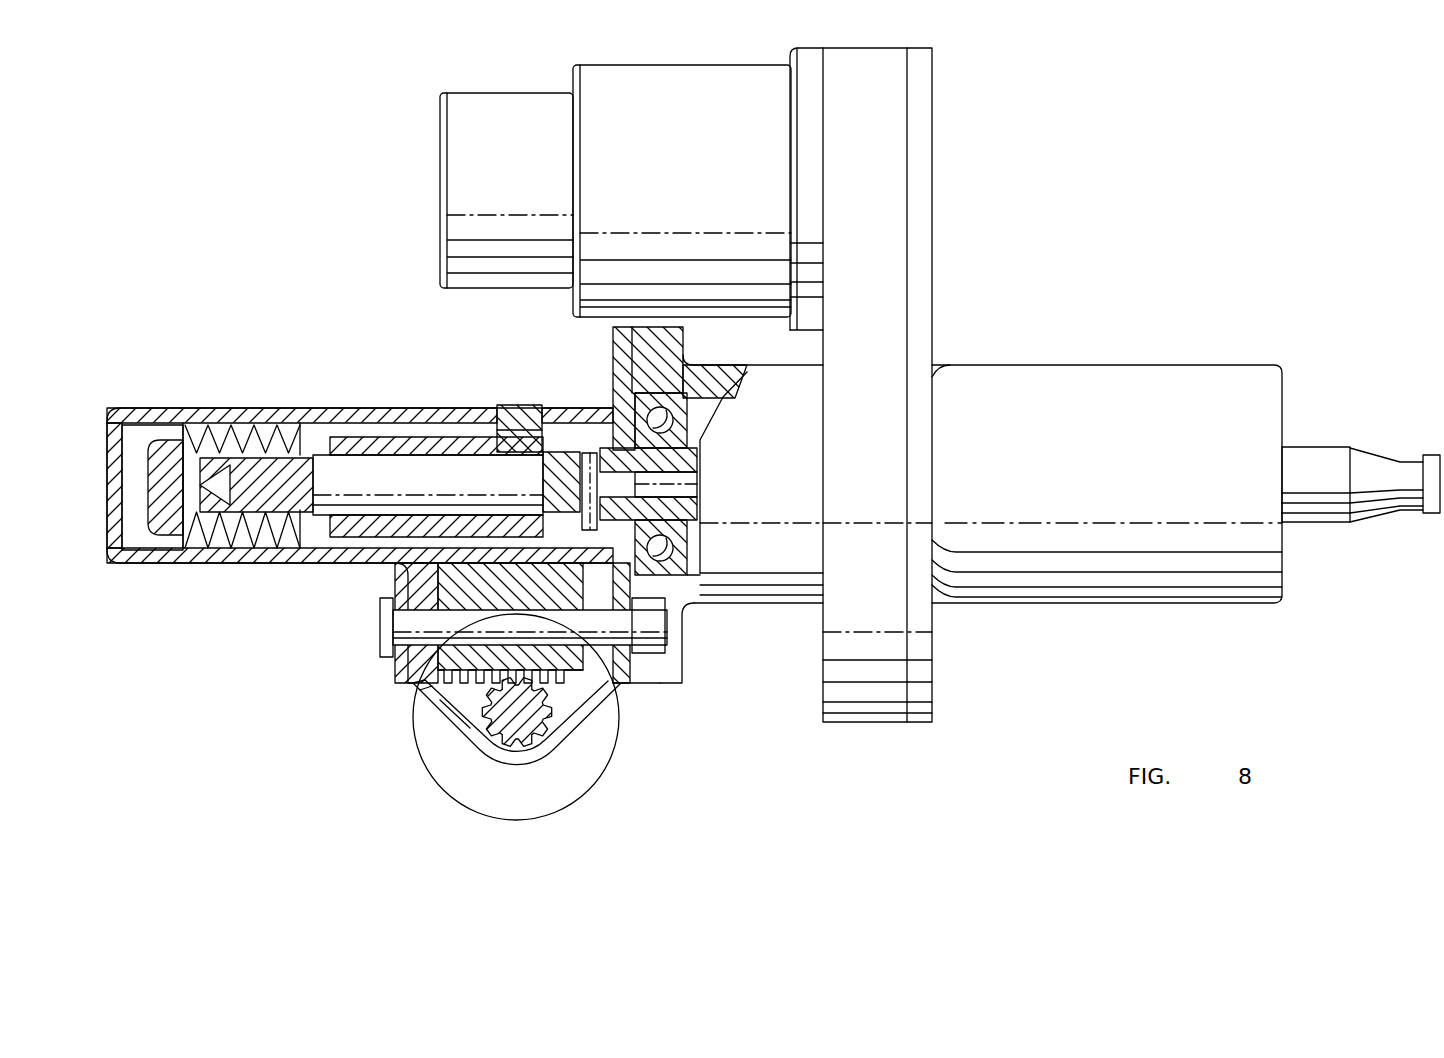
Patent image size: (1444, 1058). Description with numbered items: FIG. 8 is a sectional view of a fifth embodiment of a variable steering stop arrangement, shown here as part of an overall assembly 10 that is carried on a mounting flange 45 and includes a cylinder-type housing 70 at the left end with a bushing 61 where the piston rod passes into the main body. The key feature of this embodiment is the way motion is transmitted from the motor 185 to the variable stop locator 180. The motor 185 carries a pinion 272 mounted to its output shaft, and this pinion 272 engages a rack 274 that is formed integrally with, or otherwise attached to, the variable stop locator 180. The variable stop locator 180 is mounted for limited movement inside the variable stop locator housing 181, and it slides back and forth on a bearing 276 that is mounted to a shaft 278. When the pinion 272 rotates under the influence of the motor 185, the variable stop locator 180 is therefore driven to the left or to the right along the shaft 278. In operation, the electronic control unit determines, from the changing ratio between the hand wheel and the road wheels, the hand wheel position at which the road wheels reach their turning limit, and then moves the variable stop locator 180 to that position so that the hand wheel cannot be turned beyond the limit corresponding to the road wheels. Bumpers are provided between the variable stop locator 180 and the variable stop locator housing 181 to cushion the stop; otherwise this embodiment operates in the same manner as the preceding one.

The actuator assembly 10 is at (1113, 226).
The mounting flange 45 is at (936, 187).
The bushing 61 is at (523, 404).
The manual override cylinder 70 is at (281, 631).
The variable stop locator 180 is at (393, 636).
The variable stop locator housing 181 is at (398, 566).
The motor 185 is at (603, 733).
The pinion 272 is at (537, 735).
The rack 274 is at (450, 700).
The bearing 276 is at (470, 728).
The shaft 278 is at (420, 686).